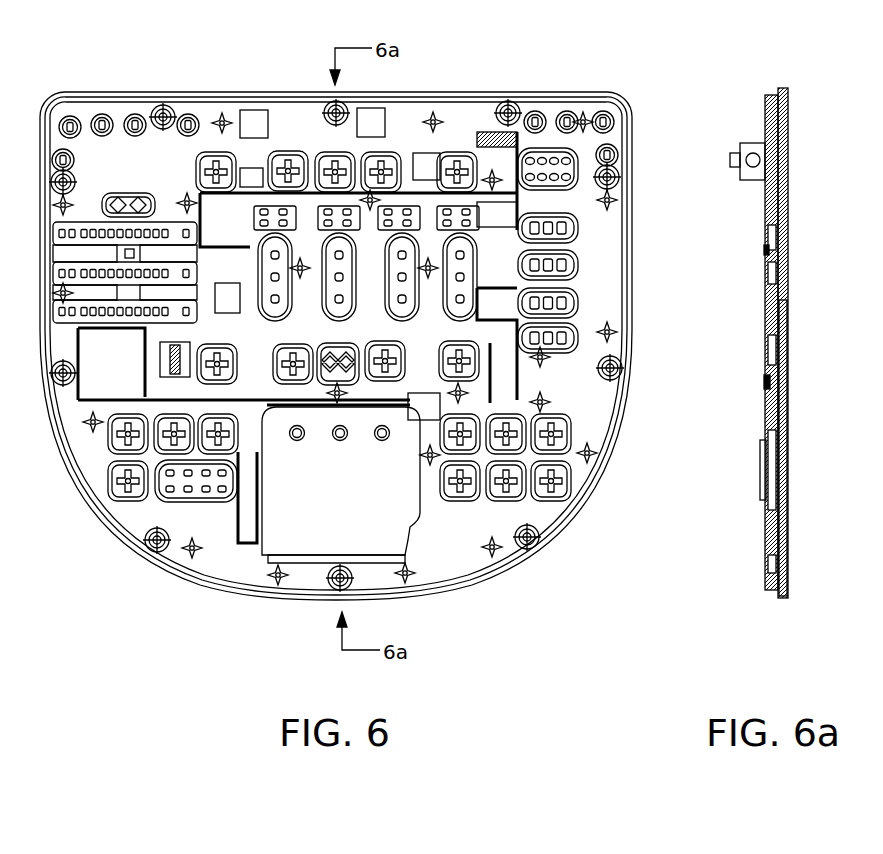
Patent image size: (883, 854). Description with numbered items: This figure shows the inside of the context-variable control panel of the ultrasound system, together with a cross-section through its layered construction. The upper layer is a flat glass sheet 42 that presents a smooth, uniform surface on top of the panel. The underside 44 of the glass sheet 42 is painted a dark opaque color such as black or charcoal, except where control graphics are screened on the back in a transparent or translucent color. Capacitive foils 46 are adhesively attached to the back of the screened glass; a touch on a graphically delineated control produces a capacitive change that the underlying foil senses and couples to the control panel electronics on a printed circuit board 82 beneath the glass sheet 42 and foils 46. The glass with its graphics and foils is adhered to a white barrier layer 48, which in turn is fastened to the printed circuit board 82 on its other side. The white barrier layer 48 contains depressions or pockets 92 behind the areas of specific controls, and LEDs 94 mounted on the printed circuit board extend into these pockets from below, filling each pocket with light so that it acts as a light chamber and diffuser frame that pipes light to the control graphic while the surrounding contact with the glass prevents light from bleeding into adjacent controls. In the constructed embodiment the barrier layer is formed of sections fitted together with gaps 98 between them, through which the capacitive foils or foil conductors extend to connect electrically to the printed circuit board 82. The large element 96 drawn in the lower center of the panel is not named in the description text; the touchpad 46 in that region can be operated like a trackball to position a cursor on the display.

In FIG. 6A, the glass sheet 42 is at (783, 240).
In FIG. 6A, the underside of the glass sheet 44 is at (780, 90).
In FIG. 6A, the capacitive foils 46 is at (778, 487).
In FIG. 6A, the white barrier layer 48 is at (765, 383).
In FIG. 6A, the printed circuit board 82 is at (765, 248).
In FIG. 6, the depressions or pockets 92 is at (342, 275).
In FIG. 6A, the depressions or pockets 92 is at (773, 273).
In FIG. 6, the LEDs 94 is at (326, 286).
In FIG. 6, the module housing 96 is at (408, 515).
In FIG. 6, the gaps 98 is at (239, 397).